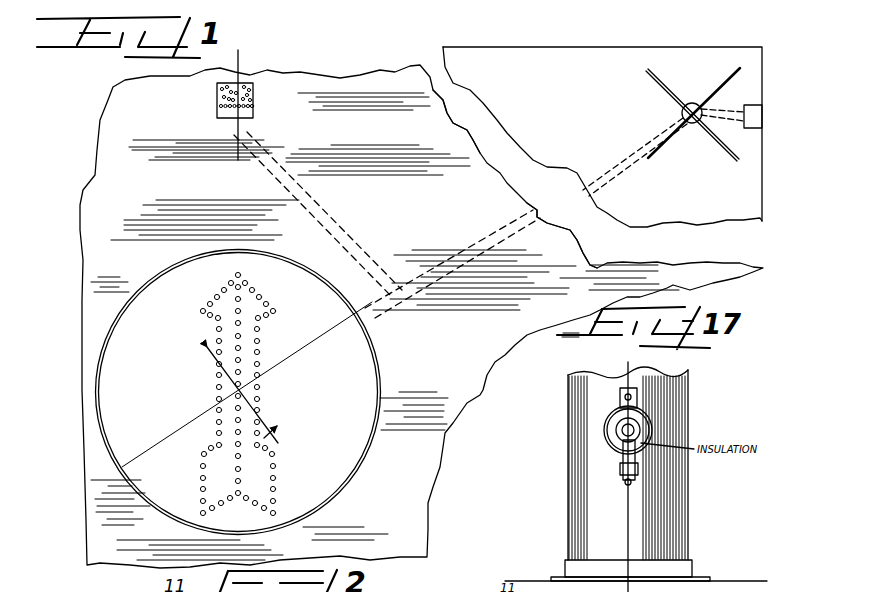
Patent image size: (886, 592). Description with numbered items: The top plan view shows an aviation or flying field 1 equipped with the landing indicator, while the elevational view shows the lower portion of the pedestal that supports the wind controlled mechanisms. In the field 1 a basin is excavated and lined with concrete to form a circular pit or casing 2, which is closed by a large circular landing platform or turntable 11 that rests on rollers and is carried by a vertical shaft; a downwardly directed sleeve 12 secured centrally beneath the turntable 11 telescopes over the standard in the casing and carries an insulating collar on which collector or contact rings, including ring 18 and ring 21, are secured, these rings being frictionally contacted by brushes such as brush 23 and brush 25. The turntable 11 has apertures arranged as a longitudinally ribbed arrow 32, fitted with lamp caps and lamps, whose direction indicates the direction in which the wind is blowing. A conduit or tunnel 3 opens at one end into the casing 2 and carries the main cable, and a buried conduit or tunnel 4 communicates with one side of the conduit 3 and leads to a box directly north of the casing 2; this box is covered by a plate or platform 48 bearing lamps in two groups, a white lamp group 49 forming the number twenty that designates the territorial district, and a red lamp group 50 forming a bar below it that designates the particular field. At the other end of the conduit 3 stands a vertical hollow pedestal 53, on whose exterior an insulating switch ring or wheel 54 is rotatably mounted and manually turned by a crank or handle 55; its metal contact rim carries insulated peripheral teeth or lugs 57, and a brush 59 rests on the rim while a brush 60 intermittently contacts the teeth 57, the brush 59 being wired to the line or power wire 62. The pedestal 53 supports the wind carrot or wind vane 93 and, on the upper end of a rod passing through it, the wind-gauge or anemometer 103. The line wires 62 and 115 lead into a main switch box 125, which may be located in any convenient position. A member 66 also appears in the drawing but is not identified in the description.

In FIG. 1, the aviation or flying field 1 is at (421, 316).
In FIG. 1, the pit or casing 2 is at (378, 333).
In FIG. 1, the conduit or tunnel 3 is at (536, 217).
In FIG. 1, the buried conduit or tunnel 4 is at (333, 222).
In FIG. 1, the landing platform or turntable 11 is at (238, 392).
In FIG. 1, the contact ring 21 is at (220, 62).
In FIG. 1, the plate or platform 48 is at (253, 113).
In FIG. 1, the lamp group 49 is at (221, 88).
In FIG. 1, the lamp group 50 is at (222, 106).
In FIG. 1, the longitudinally ribbed arrow 32 is at (246, 348).
In FIG. 1, the rod 66 is at (700, 108).
In FIG. 1, the line or power wire 62 is at (762, 108).
In FIG. 1, the wind carrot or wind vane 93 is at (689, 126).
In FIG. 1, the wind-gauge or anemometer 103 is at (683, 113).
In FIG. 1, the main switch box 125 is at (752, 128).
In FIG. 1, the line wire 115 is at (762, 122).
In FIG. 1, the brush 23 is at (439, 586).
In FIG. 1, the brush 25 is at (463, 586).
In FIG. 17, the contact ring 18 is at (626, 362).
In FIG. 17, the downwardly directed sleeve 12 is at (627, 588).
In FIG. 17, the hollow post, standard or pedestal 53 is at (636, 474).
In FIG. 17, the insulating switch ring or wheel 54 is at (640, 434).
In FIG. 17, the peripheral teeth or lugs 57 is at (603, 410).
In FIG. 17, the brush 59 is at (655, 416).
In FIG. 17, the brush 60 is at (604, 452).
In FIG. 17, the crank or handle 55 is at (624, 482).